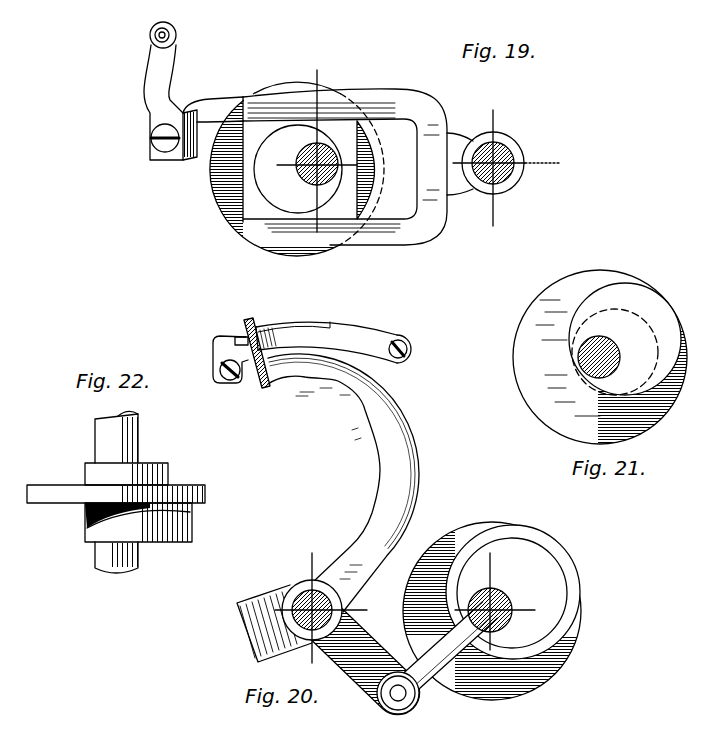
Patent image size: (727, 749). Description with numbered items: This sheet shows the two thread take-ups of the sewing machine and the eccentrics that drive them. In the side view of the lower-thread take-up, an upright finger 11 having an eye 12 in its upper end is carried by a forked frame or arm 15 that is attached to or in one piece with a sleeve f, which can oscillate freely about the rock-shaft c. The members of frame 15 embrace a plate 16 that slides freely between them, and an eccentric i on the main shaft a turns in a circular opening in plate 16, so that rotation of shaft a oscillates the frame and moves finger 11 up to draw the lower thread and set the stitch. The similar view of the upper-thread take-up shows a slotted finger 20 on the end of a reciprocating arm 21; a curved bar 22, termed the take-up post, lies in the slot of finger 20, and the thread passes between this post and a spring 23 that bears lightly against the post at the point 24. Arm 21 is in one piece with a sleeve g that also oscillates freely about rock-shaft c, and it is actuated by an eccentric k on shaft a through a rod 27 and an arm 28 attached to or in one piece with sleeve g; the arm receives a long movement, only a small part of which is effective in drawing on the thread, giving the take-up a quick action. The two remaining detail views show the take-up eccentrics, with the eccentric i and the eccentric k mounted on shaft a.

In FIG. 19, the upright finger 11 is at (169, 75).
In FIG. 19, the eye 12 is at (147, 35).
In FIG. 19, the frame or arm 15 is at (373, 92).
In FIG. 19, the plate 16 is at (383, 192).
In FIG. 20, the slotted finger 20 is at (248, 322).
In FIG. 20, the reciprocating arm 21 is at (382, 475).
In FIG. 20, the curved bar 22 is at (383, 339).
In FIG. 20, the spring 23 is at (302, 326).
In FIG. 20, the point 24 is at (256, 336).
In FIG. 20, the rod 27 is at (447, 660).
In FIG. 20, the arm 28 is at (358, 680).
In FIG. 19, the main shaft a is at (309, 154).
In FIG. 21, the main shaft a is at (579, 355).
In FIG. 22, the main shaft a is at (95, 431).
In FIG. 19, the rock-shaft c is at (514, 158).
In FIG. 20, the rock-shaft c is at (297, 597).
In FIG. 19, the sleeve f is at (476, 139).
In FIG. 20, the sleeve g is at (238, 626).
In FIG. 19, the eccentric i is at (297, 169).
In FIG. 21, the eccentric i is at (682, 372).
In FIG. 22, the eccentric i is at (133, 470).
In FIG. 20, the eccentric k is at (562, 588).
In FIG. 21, the eccentric k is at (647, 304).
In FIG. 22, the eccentric k is at (170, 540).